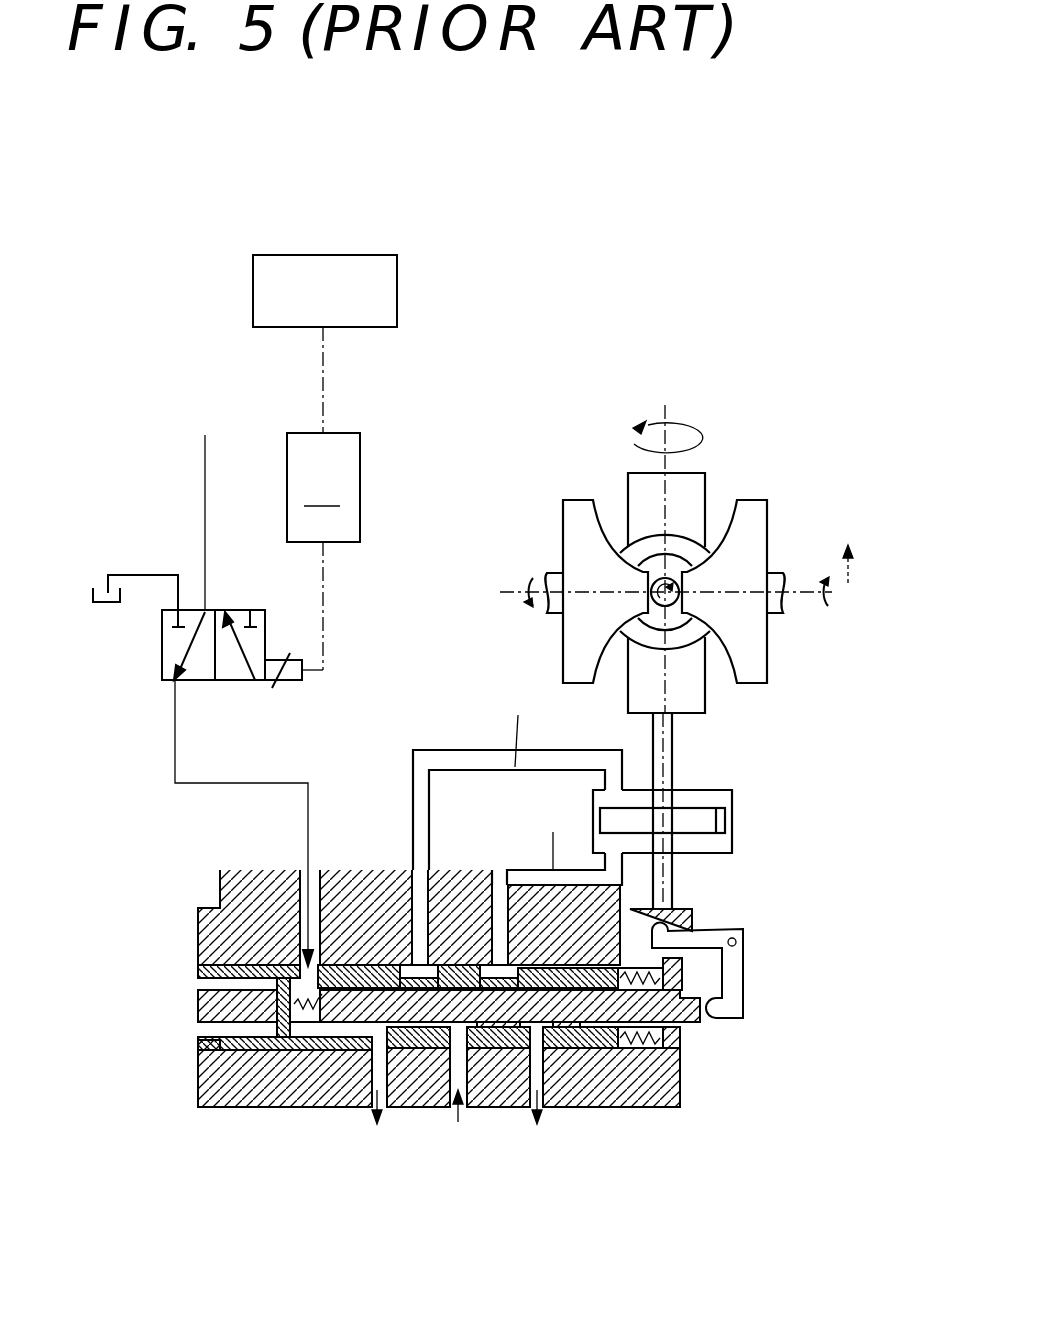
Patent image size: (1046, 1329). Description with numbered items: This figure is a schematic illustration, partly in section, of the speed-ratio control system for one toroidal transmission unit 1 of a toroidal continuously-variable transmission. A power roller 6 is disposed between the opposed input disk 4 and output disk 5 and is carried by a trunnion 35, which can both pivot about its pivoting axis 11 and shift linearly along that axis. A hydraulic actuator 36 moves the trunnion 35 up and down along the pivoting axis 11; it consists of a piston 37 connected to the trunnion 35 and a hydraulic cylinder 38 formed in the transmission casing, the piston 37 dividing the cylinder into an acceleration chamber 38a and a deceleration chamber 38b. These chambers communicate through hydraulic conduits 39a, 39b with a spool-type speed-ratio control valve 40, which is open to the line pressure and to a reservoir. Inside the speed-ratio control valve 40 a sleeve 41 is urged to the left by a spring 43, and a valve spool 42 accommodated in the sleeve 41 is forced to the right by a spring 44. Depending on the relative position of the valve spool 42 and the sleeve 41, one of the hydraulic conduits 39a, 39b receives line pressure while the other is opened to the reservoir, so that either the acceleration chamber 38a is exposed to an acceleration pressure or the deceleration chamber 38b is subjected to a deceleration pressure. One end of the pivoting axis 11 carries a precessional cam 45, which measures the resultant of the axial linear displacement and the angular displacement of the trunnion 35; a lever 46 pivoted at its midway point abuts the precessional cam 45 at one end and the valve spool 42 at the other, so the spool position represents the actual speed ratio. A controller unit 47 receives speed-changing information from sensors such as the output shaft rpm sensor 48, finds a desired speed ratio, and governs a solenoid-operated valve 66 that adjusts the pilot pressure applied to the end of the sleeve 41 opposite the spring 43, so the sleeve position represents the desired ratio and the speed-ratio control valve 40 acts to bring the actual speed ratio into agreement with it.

The toroidal transmission unit 1 is at (685, 530).
The input disk 4 is at (578, 530).
The output disk 5 is at (762, 520).
The power roller 6 is at (688, 540).
The pivoting axis 11 is at (655, 738).
The trunnion 35 is at (640, 497).
The hydraulic actuator 36 is at (632, 792).
The piston 37 is at (713, 823).
The hydraulic cylinder 38 is at (698, 804).
The acceleration chamber 38a is at (693, 845).
The deceleration chamber 38b is at (700, 800).
The hydraulic conduit 39a is at (505, 872).
The hydraulic conduit 39b is at (450, 752).
The speed-ratio control valve 40 is at (348, 1112).
The sleeve 41 is at (375, 963).
The valve spool 42 is at (690, 1022).
The spring 43 is at (640, 1048).
The spring 44 is at (305, 1108).
The precessional cam 45 is at (700, 912).
The lever 46 is at (740, 983).
The controller unit 47 is at (323, 498).
The output shaft rpm sensor 48 is at (325, 291).
The solenoid-operated valve 66 is at (168, 662).